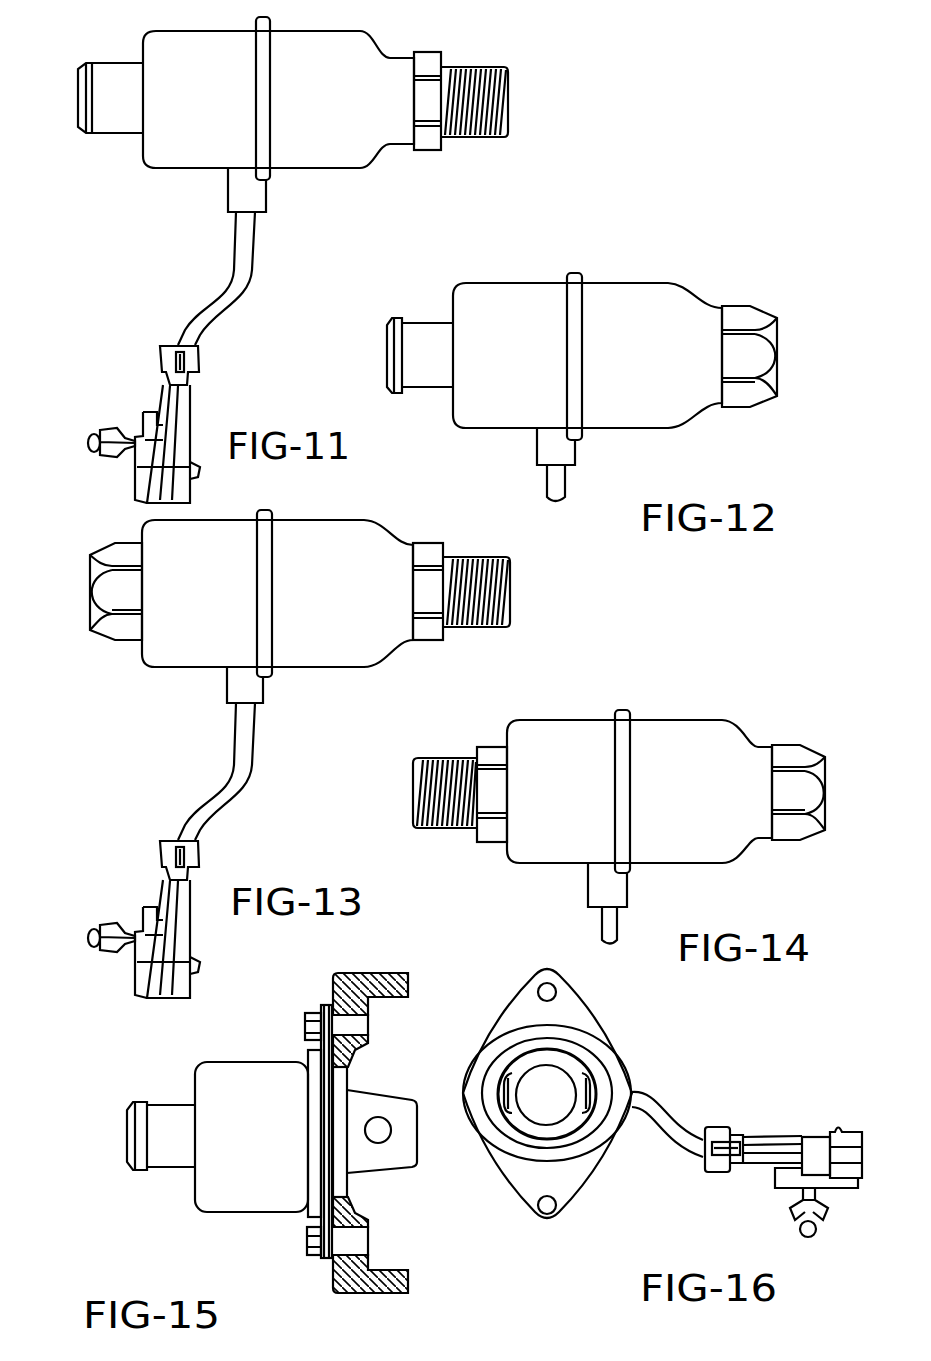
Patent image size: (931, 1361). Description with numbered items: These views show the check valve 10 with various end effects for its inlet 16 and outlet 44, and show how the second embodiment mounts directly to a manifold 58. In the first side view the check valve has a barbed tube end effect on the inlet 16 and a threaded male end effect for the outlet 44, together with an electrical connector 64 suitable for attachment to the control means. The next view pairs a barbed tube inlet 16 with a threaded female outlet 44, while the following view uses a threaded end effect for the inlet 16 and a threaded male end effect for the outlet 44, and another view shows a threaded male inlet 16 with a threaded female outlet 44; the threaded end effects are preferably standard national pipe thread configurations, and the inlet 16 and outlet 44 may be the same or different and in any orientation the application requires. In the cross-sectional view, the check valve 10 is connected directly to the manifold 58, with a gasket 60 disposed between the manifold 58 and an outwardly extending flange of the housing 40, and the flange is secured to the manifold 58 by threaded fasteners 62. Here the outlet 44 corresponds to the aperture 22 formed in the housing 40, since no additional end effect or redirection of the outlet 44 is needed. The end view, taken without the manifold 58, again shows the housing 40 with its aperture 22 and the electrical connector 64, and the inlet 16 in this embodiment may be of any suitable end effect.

In FIG. 11, the check valve 10 is at (348, 178).
In FIG. 12, the check valve 10 is at (651, 434).
In FIG. 13, the check valve 10 is at (352, 669).
In FIG. 14, the check valve 10 is at (716, 876).
In FIG. 15, the check valve 10 is at (384, 1214).
In FIG. 16, the check valve 10 is at (632, 1160).
In FIG. 11, the inlet 16 is at (108, 62).
In FIG. 12, the inlet 16 is at (420, 318).
In FIG. 13, the inlet 16 is at (108, 543).
In FIG. 14, the inlet 16 is at (470, 728).
In FIG. 15, the inlet 16 is at (155, 1100).
In FIG. 15, the aperture 22 is at (378, 1127).
In FIG. 16, the aperture 22 is at (507, 1073).
In FIG. 11, the housing 40 is at (164, 31).
In FIG. 12, the housing 40 is at (525, 283).
In FIG. 13, the housing 40 is at (163, 521).
In FIG. 14, the housing 40 is at (580, 720).
In FIG. 15, the housing 40 is at (230, 1062).
In FIG. 16, the housing 40 is at (598, 1020).
In FIG. 11, the outlet 44 is at (482, 62).
In FIG. 12, the outlet 44 is at (751, 306).
In FIG. 13, the outlet 44 is at (473, 630).
In FIG. 14, the outlet 44 is at (811, 718).
In FIG. 15, the manifold 58 is at (353, 961).
In FIG. 15, the gasket 60 is at (323, 1000).
In FIG. 15, the threaded fasteners 62 is at (320, 1258).
In FIG. 11, the electrical connector 64 is at (127, 422).
In FIG. 13, the electrical connector 64 is at (129, 917).
In FIG. 16, the electrical connector 64 is at (782, 1133).